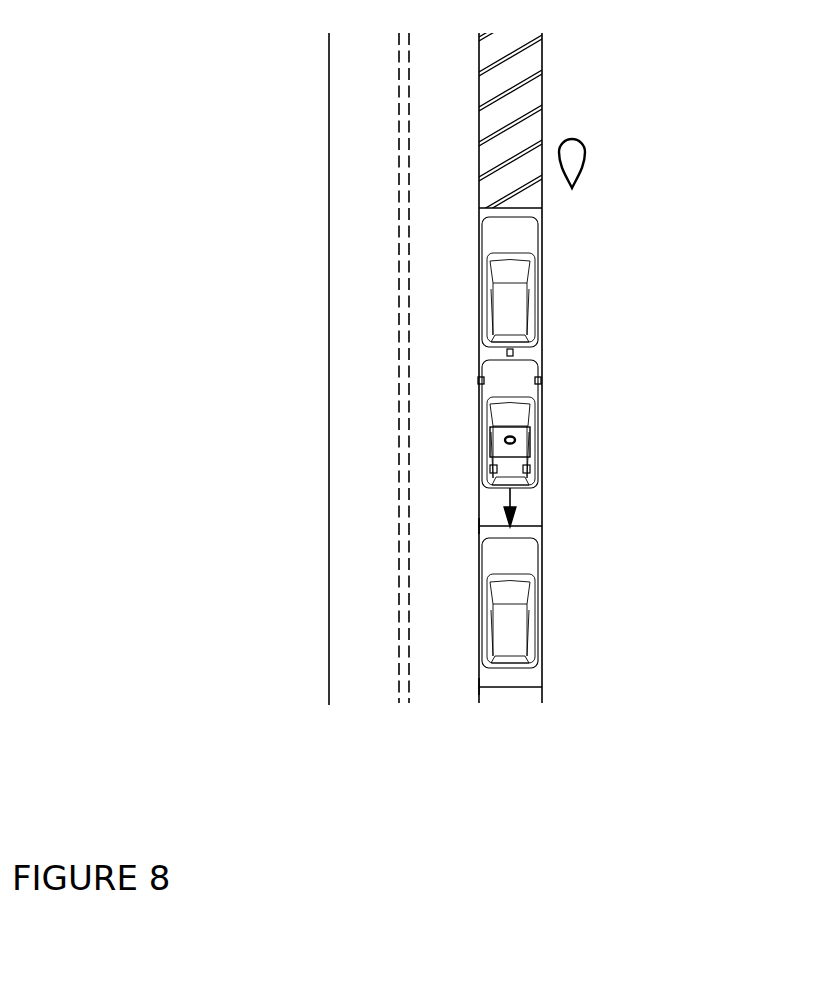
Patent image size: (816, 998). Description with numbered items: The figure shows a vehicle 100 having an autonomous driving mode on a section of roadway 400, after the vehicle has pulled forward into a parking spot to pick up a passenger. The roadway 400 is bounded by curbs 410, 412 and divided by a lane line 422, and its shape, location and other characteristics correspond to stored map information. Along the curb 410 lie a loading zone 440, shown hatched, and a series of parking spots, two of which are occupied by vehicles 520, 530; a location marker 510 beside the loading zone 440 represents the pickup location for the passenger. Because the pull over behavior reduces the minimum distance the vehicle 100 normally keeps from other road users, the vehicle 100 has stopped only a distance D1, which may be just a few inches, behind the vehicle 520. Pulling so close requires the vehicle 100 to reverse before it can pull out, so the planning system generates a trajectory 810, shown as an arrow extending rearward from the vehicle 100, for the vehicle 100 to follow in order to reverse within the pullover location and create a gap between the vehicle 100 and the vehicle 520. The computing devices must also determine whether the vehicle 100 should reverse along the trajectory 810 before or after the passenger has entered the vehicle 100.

The section of roadway 400 is at (110, 838).
The curb 412 is at (329, 106).
The lane line 422 is at (399, 343).
The loading zone 440 is at (557, 124).
The location marker 510 is at (582, 165).
The curb 410 is at (542, 268).
The vehicle 520 is at (538, 320).
The distance D1 is at (516, 352).
The vehicle 100 is at (538, 430).
The trajectory 810 is at (513, 503).
The vehicle 530 is at (538, 625).